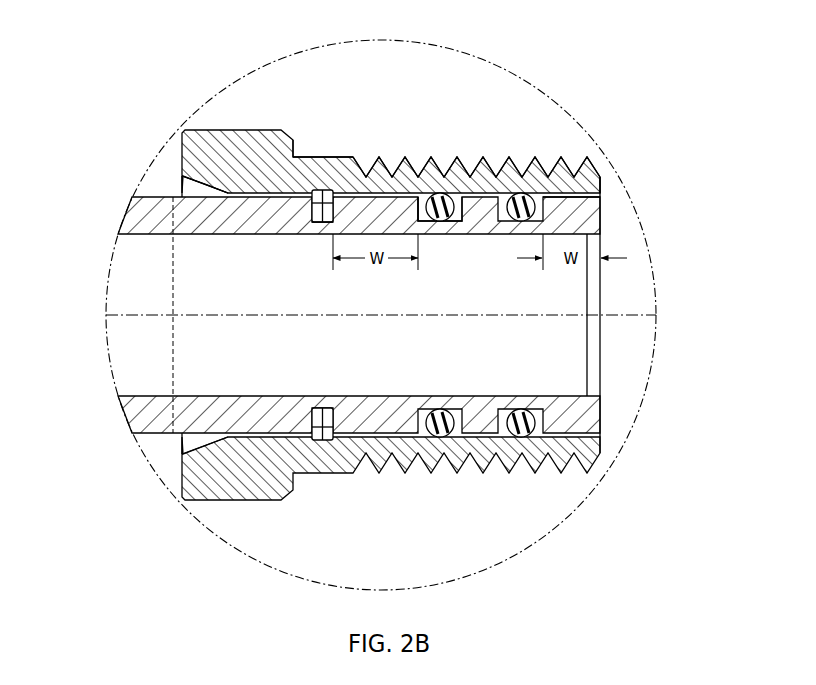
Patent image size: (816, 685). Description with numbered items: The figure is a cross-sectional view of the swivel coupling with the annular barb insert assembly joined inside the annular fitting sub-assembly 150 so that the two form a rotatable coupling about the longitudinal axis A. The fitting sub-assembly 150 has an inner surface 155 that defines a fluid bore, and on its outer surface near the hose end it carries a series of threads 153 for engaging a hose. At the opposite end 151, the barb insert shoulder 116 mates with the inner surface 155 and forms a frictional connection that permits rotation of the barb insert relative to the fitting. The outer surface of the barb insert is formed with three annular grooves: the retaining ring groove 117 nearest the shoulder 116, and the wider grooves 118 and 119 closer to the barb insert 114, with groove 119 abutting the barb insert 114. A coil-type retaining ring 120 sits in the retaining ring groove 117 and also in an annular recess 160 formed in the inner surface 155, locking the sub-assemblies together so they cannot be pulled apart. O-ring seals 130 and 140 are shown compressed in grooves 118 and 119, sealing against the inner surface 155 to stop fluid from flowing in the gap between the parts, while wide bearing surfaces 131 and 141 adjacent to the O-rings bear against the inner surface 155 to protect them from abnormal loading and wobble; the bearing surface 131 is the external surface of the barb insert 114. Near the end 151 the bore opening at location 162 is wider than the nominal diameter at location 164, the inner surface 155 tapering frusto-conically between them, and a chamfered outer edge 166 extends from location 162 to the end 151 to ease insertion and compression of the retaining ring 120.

The annular fitting sub-assembly 150 is at (172, 133).
The end 151 is at (178, 170).
The shoulder 116 is at (180, 188).
The inner surface 155 is at (600, 437).
The chamfered outer edge 166 is at (207, 173).
The location 162 is at (225, 190).
The location 164 is at (297, 187).
The annular recess 160 is at (326, 188).
The retaining ring groove 117 is at (323, 228).
The retaining ring 120 is at (352, 158).
The bearing surface 131 is at (410, 192).
The O-ring seal 130 is at (447, 197).
The groove 118 is at (465, 228).
The O-ring seal 140 is at (524, 196).
The threads 153 is at (574, 155).
The bearing surface 141 is at (598, 178).
The barb insert 114 is at (548, 222).
The groove 119 is at (565, 222).
The longitudinal axis A is at (320, 315).